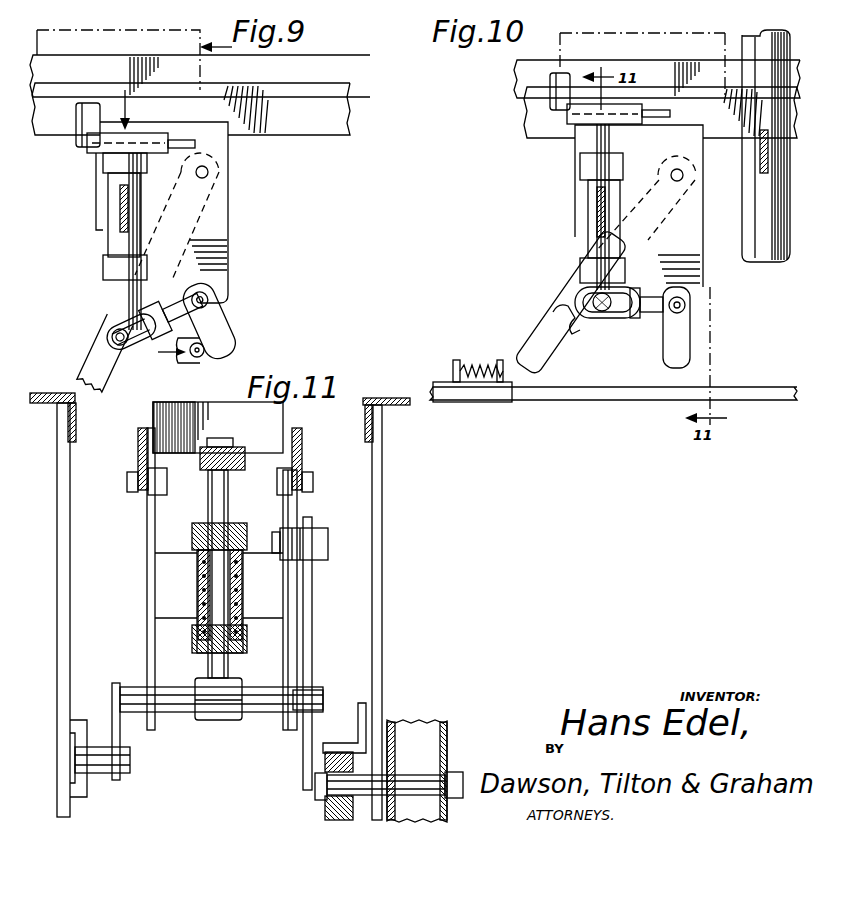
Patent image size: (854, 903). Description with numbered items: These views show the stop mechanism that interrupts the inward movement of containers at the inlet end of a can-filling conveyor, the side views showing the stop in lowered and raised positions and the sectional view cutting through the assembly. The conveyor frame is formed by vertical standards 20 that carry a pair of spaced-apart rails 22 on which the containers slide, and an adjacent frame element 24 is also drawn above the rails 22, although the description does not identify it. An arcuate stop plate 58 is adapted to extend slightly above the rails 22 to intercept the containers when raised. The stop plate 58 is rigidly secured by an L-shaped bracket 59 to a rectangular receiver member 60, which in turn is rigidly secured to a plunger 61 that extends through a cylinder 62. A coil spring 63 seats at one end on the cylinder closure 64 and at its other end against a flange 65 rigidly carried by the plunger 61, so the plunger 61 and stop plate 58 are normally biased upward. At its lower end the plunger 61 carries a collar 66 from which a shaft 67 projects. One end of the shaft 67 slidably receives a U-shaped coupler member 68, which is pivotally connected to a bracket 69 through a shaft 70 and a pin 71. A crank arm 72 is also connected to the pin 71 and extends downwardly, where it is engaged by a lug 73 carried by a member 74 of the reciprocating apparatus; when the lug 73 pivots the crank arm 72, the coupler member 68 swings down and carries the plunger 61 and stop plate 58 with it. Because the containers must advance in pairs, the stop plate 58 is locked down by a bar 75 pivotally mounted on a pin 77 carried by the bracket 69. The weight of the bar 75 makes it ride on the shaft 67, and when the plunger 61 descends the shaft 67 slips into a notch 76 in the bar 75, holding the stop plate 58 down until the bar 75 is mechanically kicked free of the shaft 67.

In FIG. 11, the vertical standard 20 is at (450, 730).
In FIG. 9, the rail 22 is at (340, 117).
In FIG. 10, the rail 22 is at (530, 112).
In FIG. 11, the rail 22 is at (138, 438).
In FIG. 9, the plate 24 is at (356, 72).
In FIG. 10, the plate 24 is at (520, 67).
In FIG. 11, the plate 24 is at (52, 393).
In FIG. 9, the arcuate stop plate 58 is at (85, 126).
In FIG. 10, the arcuate stop plate 58 is at (563, 103).
In FIG. 11, the arcuate stop plate 58 is at (155, 410).
In FIG. 11, the L-shaped bracket 59 is at (220, 440).
In FIG. 9, the rectangular receiver member 60 is at (165, 140).
In FIG. 10, the rectangular receiver member 60 is at (638, 106).
In FIG. 11, the rectangular receiver member 60 is at (240, 468).
In FIG. 9, the plunger 61 is at (117, 288).
In FIG. 10, the plunger 61 is at (595, 143).
In FIG. 11, the plunger 61 is at (230, 497).
In FIG. 9, the cylinder 62 is at (108, 240).
In FIG. 10, the cylinder 62 is at (588, 203).
In FIG. 11, the cylinder 62 is at (243, 583).
In FIG. 11, the coil spring 63 is at (198, 590).
In FIG. 11, the cylinder closure 64 is at (243, 645).
In FIG. 11, the flange 65 is at (205, 528).
In FIG. 9, the collar 66 is at (155, 320).
In FIG. 10, the collar 66 is at (614, 316).
In FIG. 9, the shaft 67 is at (119, 336).
In FIG. 10, the shaft 67 is at (603, 312).
In FIG. 9, the U-shaped coupler member 68 is at (131, 331).
In FIG. 10, the U-shaped coupler member 68 is at (580, 290).
In FIG. 9, the bracket 69 is at (212, 248).
In FIG. 10, the bracket 69 is at (692, 233).
In FIG. 11, the bracket 69 is at (150, 535).
In FIG. 9, the shaft 70 is at (182, 307).
In FIG. 10, the shaft 70 is at (652, 315).
In FIG. 9, the pin 71 is at (199, 299).
In FIG. 10, the pin 71 is at (686, 305).
In FIG. 11, the pin 71 is at (250, 712).
In FIG. 9, the crank arm 72 is at (228, 345).
In FIG. 10, the crank arm 72 is at (683, 345).
In FIG. 11, the crank arm 72 is at (112, 690).
In FIG. 9, the lug 73 is at (196, 358).
In FIG. 11, the lug 73 is at (130, 762).
In FIG. 9, the member 74 is at (176, 356).
In FIG. 11, the member 74 is at (68, 760).
In FIG. 9, the bar 75 is at (90, 366).
In FIG. 10, the bar 75 is at (532, 318).
In FIG. 11, the bar 75 is at (311, 593).
In FIG. 10, the notch 76 is at (563, 322).
In FIG. 11, the notch 76 is at (312, 720).
In FIG. 9, the pin 77 is at (208, 172).
In FIG. 10, the pin 77 is at (683, 175).
In FIG. 11, the pin 77 is at (328, 535).